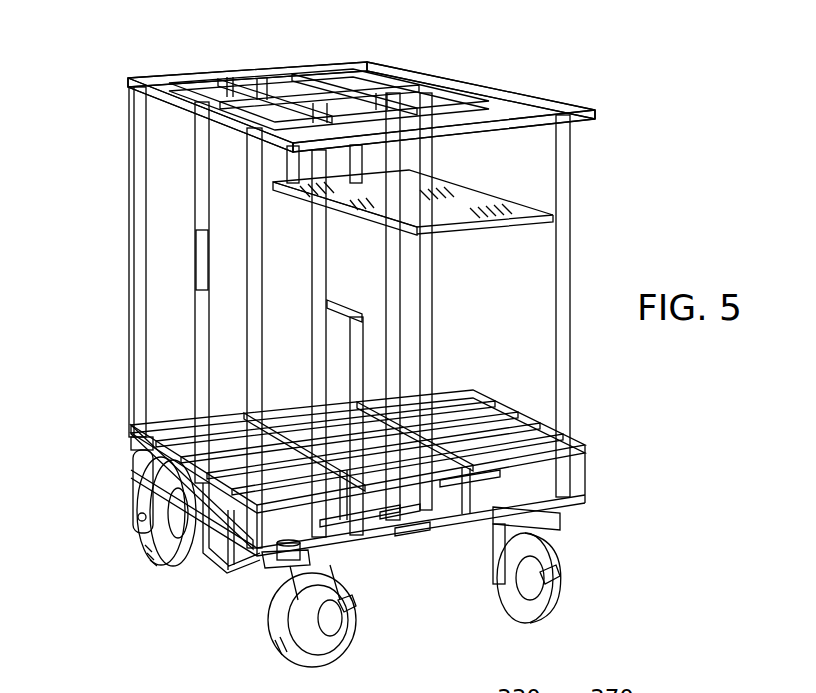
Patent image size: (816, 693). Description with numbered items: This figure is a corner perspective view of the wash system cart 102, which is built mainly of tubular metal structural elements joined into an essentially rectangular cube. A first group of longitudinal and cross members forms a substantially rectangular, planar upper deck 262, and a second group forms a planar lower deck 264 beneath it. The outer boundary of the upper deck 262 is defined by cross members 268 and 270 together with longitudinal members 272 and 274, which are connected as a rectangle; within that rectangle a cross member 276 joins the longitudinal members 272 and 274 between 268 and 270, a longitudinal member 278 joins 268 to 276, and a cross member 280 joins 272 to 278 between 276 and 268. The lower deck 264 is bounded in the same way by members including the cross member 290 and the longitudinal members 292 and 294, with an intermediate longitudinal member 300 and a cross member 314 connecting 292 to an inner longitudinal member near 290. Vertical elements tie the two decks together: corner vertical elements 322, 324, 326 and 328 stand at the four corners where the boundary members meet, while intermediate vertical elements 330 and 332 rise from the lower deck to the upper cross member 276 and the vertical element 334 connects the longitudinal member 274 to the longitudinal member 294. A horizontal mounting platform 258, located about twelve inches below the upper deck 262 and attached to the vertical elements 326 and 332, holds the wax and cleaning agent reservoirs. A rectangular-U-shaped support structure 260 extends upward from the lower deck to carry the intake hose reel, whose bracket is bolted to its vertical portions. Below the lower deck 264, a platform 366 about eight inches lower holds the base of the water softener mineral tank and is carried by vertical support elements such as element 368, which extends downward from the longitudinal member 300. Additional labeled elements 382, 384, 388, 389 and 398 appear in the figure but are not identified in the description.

The cart 102 is at (533, 289).
The horizontal mounting platform 258 is at (553, 233).
The rectangular-U-shaped support structure 260 is at (330, 300).
The upper deck 262 is at (598, 102).
The lower deck 264 is at (585, 495).
The cross member 268 is at (225, 70).
The cross member 270 is at (520, 123).
The longitudinal member 272 is at (473, 80).
The longitudinal member 274 is at (157, 103).
The cross member 276 is at (510, 107).
The longitudinal member 278 is at (257, 88).
The cross member 280 is at (367, 62).
The cross member 290 is at (170, 413).
The longitudinal member 292 is at (460, 430).
The longitudinal member 294 is at (147, 463).
The longitudinal member 300 is at (387, 527).
The cross member 314 is at (293, 427).
The vertical element 322 is at (150, 258).
The vertical element 324 is at (270, 205).
The vertical element 326 is at (570, 388).
The vertical element 328 is at (383, 310).
The vertical element 330 is at (352, 528).
The vertical element 332 is at (428, 360).
The vertical element 334 is at (212, 243).
The platform 366 is at (213, 567).
The vertical support element 368 is at (260, 567).
The vertical post 382 is at (197, 97).
The top cross bar 384 is at (233, 110).
The bottom rail 388 is at (403, 517).
The deck rail 389 is at (457, 487).
The deck cross rail 398 is at (240, 413).